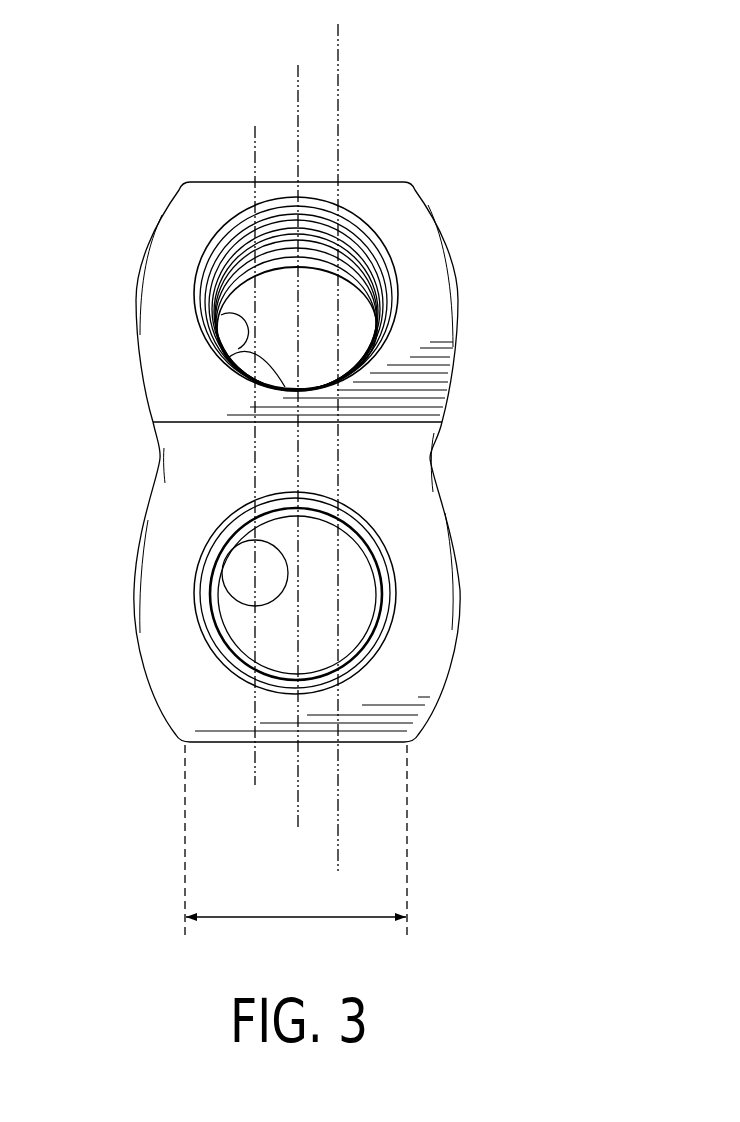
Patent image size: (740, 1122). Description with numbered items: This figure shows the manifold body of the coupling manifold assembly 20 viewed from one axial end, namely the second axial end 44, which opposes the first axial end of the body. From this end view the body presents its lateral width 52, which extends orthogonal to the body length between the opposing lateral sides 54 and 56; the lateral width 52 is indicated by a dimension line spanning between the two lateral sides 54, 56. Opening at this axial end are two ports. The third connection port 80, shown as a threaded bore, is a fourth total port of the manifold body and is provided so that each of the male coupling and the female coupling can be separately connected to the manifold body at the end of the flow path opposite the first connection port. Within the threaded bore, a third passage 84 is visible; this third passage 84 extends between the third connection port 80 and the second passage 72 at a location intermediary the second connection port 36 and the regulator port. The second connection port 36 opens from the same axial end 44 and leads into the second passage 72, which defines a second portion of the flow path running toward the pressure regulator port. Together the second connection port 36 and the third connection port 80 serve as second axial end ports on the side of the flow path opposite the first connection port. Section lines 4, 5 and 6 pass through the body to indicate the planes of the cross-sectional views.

The coupling manifold assembly 20 is at (495, 210).
The second axial end 44 is at (393, 212).
The lateral side 54 is at (463, 353).
The lateral side 56 is at (132, 378).
The third connection port 80 is at (350, 218).
The third passage 84 is at (218, 318).
The second connection port 36 is at (387, 627).
The second passage 72 is at (227, 595).
The lateral width 52 is at (227, 920).
The section line 4- 4 is at (255, 126).
The section line 5- 5 is at (298, 65).
The section line 6- 6 is at (338, 24).